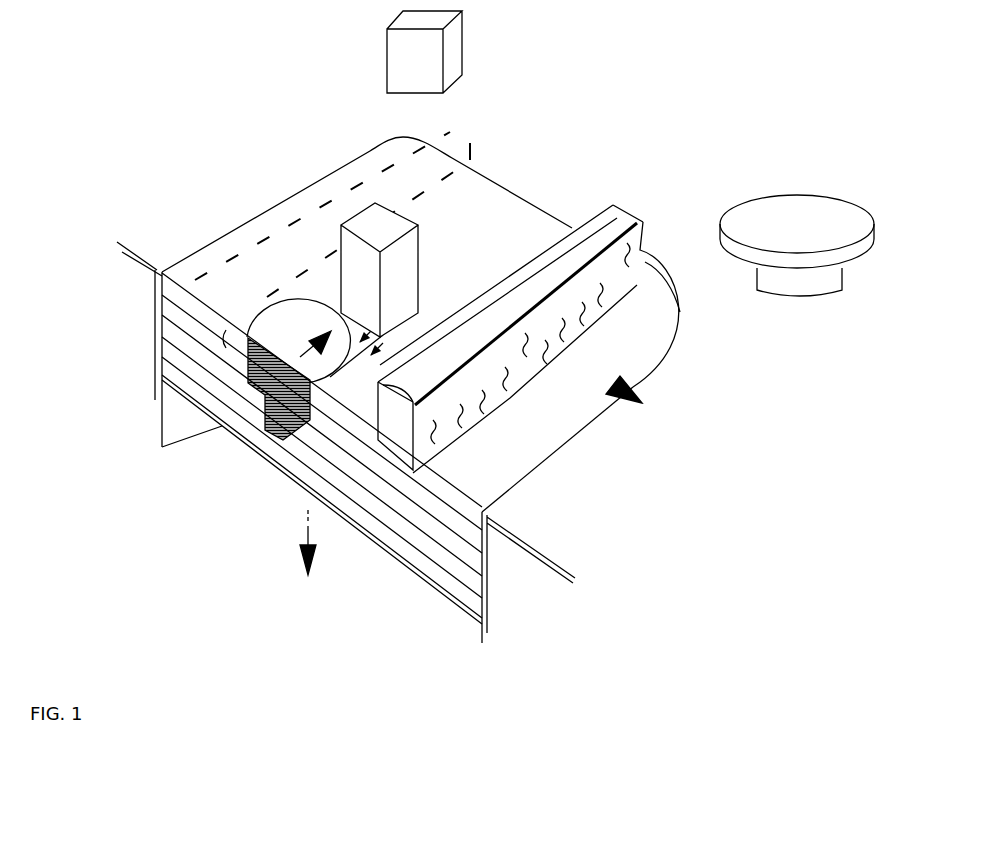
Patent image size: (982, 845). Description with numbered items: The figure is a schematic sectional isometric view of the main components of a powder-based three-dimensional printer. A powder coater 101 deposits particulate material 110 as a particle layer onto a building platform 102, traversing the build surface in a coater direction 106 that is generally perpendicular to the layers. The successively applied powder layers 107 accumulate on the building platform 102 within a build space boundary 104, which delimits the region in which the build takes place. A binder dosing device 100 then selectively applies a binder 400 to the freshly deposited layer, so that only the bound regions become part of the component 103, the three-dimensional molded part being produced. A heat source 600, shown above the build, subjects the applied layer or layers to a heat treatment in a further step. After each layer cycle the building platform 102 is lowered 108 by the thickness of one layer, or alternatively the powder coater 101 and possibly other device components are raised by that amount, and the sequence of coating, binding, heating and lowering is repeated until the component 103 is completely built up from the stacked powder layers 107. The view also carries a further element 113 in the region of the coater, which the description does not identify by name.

The binder dosing device 100 is at (405, 284).
The powder coater 101 is at (564, 262).
The building platform 102 is at (220, 430).
The component (3D molded part) 103 is at (806, 283).
The build space boundary 104 is at (155, 350).
The coater direction 106 is at (584, 376).
The powder layers 107 is at (465, 548).
The lowering of the building platform 108 is at (300, 546).
The particulate material 110 is at (623, 266).
The trough end 113 is at (388, 428).
The binder 400 is at (318, 395).
The heat source 600 is at (453, 62).